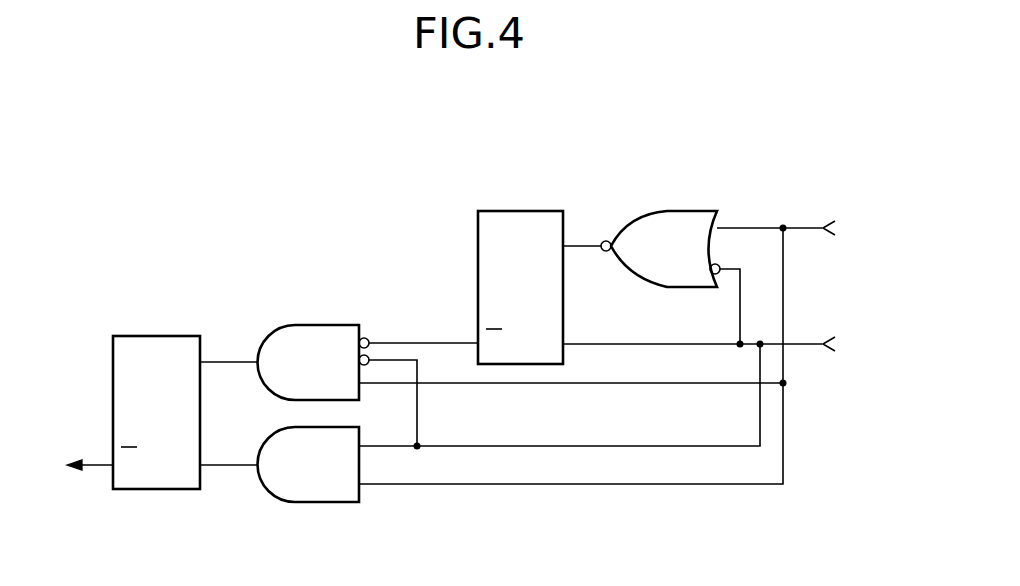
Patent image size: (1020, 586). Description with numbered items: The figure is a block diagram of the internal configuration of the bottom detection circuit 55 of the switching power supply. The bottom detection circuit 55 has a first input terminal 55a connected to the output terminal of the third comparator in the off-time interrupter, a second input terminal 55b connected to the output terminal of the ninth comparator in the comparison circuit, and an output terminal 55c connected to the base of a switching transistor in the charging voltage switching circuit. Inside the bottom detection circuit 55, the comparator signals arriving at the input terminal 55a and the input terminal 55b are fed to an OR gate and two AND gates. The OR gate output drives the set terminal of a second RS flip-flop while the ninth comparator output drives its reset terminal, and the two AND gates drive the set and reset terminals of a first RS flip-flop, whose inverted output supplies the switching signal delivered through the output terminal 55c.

The bottom detection circuit 55 is at (558, 167).
The input terminal 55a is at (808, 228).
The input terminal 55b is at (808, 345).
The output terminal 55c is at (96, 460).